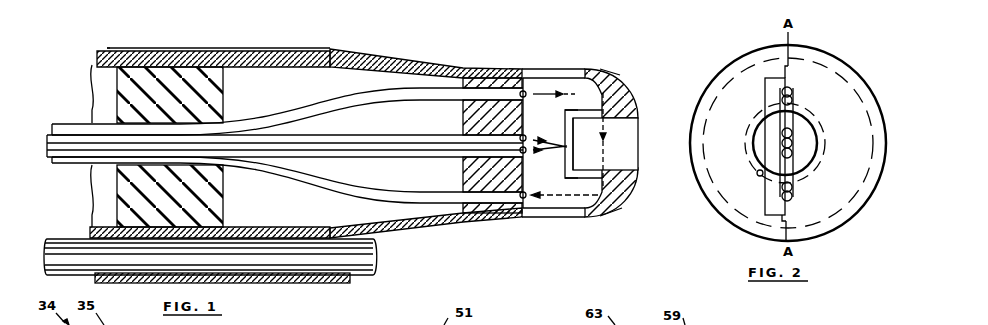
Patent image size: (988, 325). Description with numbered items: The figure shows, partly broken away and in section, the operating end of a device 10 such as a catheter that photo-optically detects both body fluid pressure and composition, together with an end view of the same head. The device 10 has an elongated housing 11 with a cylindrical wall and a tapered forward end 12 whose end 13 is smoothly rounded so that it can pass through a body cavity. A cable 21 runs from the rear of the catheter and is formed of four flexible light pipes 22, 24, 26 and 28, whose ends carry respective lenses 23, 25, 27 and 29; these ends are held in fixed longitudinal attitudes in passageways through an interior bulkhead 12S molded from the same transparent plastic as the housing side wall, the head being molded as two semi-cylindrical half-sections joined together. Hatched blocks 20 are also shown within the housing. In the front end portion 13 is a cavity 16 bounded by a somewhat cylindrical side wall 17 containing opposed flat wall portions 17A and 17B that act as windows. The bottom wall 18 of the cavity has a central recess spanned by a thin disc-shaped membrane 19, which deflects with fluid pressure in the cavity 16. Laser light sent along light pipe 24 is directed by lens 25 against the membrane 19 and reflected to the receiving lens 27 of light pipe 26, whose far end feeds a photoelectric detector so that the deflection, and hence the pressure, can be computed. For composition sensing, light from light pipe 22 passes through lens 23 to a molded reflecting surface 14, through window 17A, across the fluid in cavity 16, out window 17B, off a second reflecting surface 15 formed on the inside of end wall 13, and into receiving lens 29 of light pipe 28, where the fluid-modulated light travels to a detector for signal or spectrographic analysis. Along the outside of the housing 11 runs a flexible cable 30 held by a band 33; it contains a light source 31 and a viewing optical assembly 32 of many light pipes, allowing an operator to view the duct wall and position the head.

In FIG. 1, the device 10 is at (111, 32).
In FIG. 1, the elongated housing 11 is at (100, 58).
In FIG. 2, the elongated housing 11 is at (842, 77).
In FIG. 1, the tapered forward end 12 is at (440, 60).
In FIG. 1, the interior bulkhead 12S is at (490, 82).
In FIG. 1, the end 13 is at (617, 97).
In FIG. 1, the reflecting surface 14 is at (614, 95).
In FIG. 1, the reflecting surface 15 is at (605, 195).
In FIG. 1, the cavity 16 is at (632, 140).
In FIG. 1, the circumscribing side wall 17 is at (613, 110).
In FIG. 1, the flat wall portion 17A is at (603, 132).
In FIG. 2, the flat wall portion 17B is at (758, 175).
In FIG. 1, the bottom wall 18 is at (575, 170).
In FIG. 1, the membrane 19 is at (568, 147).
In FIG. 1, the mounting block 20 is at (170, 83).
In FIG. 1, the cable 21 is at (82, 157).
In FIG. 1, the light pipe 22 is at (285, 118).
In FIG. 1, the lens 23 is at (550, 72).
In FIG. 1, the light pipe 24 is at (390, 133).
In FIG. 1, the lens 25 is at (523, 136).
In FIG. 1, the light pipe 26 is at (379, 153).
In FIG. 1, the receiving lens 27 is at (526, 153).
In FIG. 1, the light pipe 28 is at (290, 168).
In FIG. 1, the receiving lens 29 is at (526, 200).
In FIG. 1, the flexible cable 30 is at (357, 278).
In FIG. 1, the light source 31 is at (377, 245).
In FIG. 1, the viewing optical assembly 32 is at (377, 268).
In FIG. 1, the band 33 is at (300, 282).